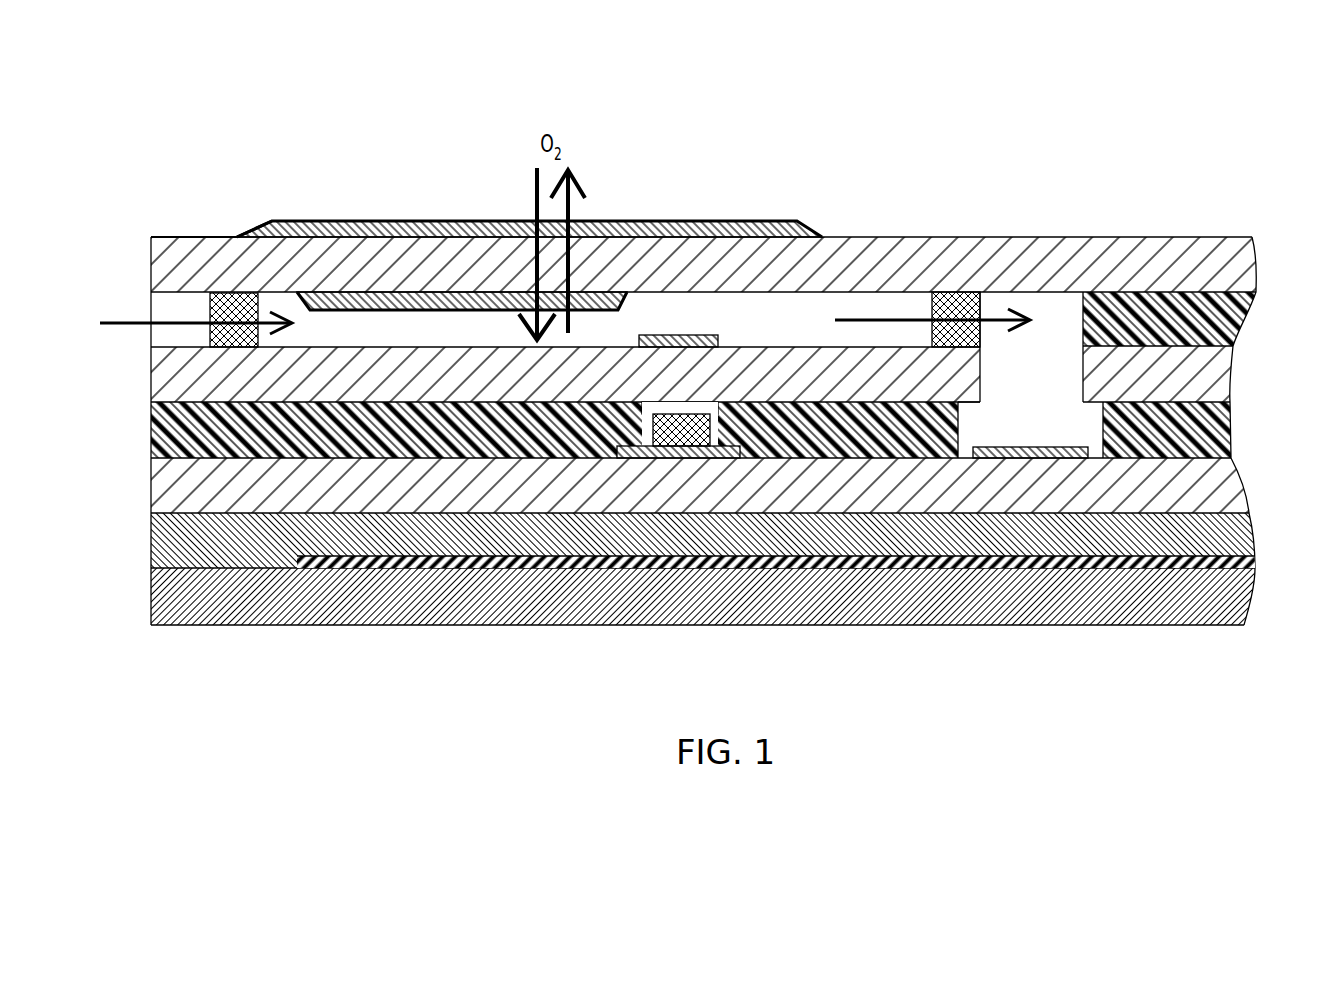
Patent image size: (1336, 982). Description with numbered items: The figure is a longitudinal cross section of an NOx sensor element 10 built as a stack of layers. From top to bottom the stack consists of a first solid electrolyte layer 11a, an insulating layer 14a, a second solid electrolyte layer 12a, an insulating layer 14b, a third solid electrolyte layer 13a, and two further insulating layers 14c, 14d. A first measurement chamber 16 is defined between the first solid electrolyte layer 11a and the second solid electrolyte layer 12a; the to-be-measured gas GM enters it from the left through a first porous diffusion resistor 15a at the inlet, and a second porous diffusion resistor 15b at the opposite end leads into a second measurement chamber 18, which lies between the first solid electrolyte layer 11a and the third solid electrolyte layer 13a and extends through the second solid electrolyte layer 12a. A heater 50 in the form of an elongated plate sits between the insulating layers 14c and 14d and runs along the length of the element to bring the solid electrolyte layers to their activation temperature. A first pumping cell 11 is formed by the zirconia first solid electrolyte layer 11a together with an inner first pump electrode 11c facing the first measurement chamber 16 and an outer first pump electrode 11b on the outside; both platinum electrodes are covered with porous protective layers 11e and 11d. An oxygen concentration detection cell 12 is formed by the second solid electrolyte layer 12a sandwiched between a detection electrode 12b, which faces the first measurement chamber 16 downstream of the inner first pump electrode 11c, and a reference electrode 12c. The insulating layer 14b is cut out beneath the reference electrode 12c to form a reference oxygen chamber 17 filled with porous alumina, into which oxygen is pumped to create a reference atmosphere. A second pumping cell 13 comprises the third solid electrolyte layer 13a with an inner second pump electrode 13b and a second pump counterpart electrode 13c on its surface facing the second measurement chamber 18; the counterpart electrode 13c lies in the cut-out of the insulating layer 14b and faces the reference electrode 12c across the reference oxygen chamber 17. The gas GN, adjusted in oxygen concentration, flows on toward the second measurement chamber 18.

The NOx sensor element 10 is at (1117, 147).
The first pumping cell 11 is at (325, 137).
The first solid electrolyte layer 11a is at (468, 250).
The outer first pump electrode 11b is at (403, 222).
The inner first pump electrode 11c is at (367, 297).
The protective layer 11d is at (275, 223).
The protective layer 11e is at (240, 237).
The oxygen concentration detection cell 12 is at (642, 137).
The second solid electrolyte layer 12a is at (765, 360).
The detection electrode 12b is at (682, 333).
The reference electrode 12c is at (642, 403).
The second pumping cell 13 is at (873, 683).
The third solid electrolyte layer 13a is at (1233, 491).
The inner second pump electrode 13b is at (973, 458).
The second pump counterpart electrode 13c is at (745, 458).
The insulating layer 14a is at (1249, 318).
The insulating layer 14b is at (151, 432).
The insulating layer 14c is at (170, 549).
The insulating layer 14d is at (170, 608).
The first porous diffusion resistor 15a is at (212, 295).
The second porous diffusion resistor 15b is at (958, 293).
The first measurement chamber 16 is at (350, 328).
The reference oxygen chamber 17 is at (658, 450).
The second measurement chamber 18 is at (1047, 310).
The heater 50 is at (400, 568).